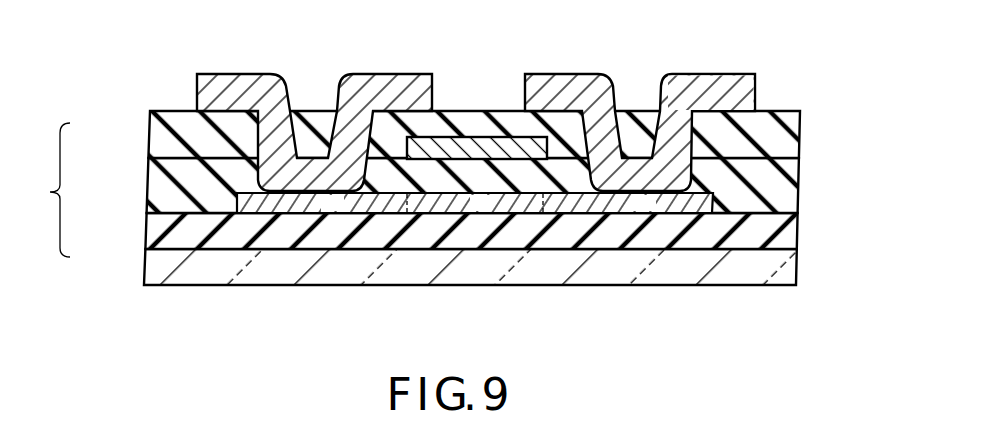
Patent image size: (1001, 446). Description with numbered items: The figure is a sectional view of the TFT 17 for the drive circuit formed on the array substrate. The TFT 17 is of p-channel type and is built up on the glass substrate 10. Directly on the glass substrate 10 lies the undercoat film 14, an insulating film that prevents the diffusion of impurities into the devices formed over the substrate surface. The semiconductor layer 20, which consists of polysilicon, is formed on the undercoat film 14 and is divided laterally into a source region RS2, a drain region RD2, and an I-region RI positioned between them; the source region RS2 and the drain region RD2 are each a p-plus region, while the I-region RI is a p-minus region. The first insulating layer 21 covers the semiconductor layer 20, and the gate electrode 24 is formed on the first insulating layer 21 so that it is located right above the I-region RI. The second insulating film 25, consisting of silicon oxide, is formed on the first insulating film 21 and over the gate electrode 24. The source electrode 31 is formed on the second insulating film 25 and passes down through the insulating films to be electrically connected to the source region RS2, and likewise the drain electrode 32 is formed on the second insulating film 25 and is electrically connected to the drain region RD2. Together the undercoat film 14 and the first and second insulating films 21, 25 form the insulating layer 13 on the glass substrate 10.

The glass substrate 10 is at (780, 274).
The insulating layer 13 is at (43, 190).
The undercoat film 14 is at (147, 232).
The TFT 17 is at (810, 72).
The semiconductor layer 20 is at (717, 206).
The first insulating layer 21 is at (147, 181).
The gate electrode 24 is at (479, 135).
The second insulating film 25 is at (147, 131).
The source electrode 31 is at (260, 73).
The drain electrode 32 is at (698, 73).
The source region RS2 is at (287, 214).
The I-region RI is at (488, 214).
The drain region RD2 is at (658, 214).